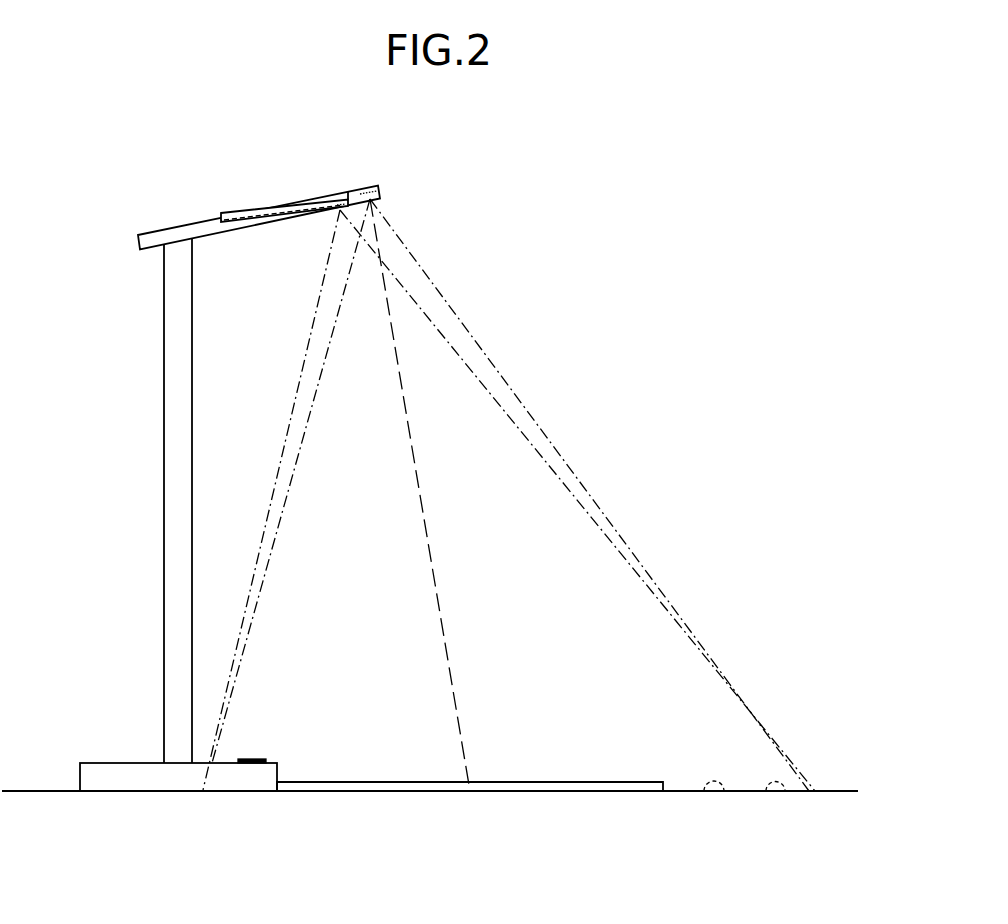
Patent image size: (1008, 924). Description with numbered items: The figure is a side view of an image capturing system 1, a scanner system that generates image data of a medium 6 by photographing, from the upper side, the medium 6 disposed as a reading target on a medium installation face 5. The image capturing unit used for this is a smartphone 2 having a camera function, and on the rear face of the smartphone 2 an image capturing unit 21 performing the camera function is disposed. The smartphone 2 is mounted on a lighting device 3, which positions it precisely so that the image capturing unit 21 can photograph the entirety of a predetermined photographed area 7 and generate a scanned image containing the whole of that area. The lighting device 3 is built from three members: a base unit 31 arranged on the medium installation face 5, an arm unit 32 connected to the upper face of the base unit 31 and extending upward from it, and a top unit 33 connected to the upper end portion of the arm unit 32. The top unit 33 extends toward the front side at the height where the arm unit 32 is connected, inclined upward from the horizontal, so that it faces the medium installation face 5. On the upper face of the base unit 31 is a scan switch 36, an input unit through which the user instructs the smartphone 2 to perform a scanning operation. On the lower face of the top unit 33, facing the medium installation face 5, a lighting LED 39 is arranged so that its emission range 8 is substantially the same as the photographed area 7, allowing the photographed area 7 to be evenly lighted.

The image capturing system 1 is at (665, 150).
The smartphone 2 is at (289, 204).
The image capturing unit 21 is at (384, 189).
The lighting device 3 is at (230, 483).
The base unit 31 is at (107, 764).
The arm unit 32 is at (172, 378).
The top unit 33 is at (178, 232).
The scan switch 36 is at (262, 760).
The lighting LED 39 is at (314, 224).
The medium installation face 5 is at (831, 790).
The medium 6 is at (546, 781).
The photographed area 7 is at (723, 795).
The emission range 8 is at (785, 795).